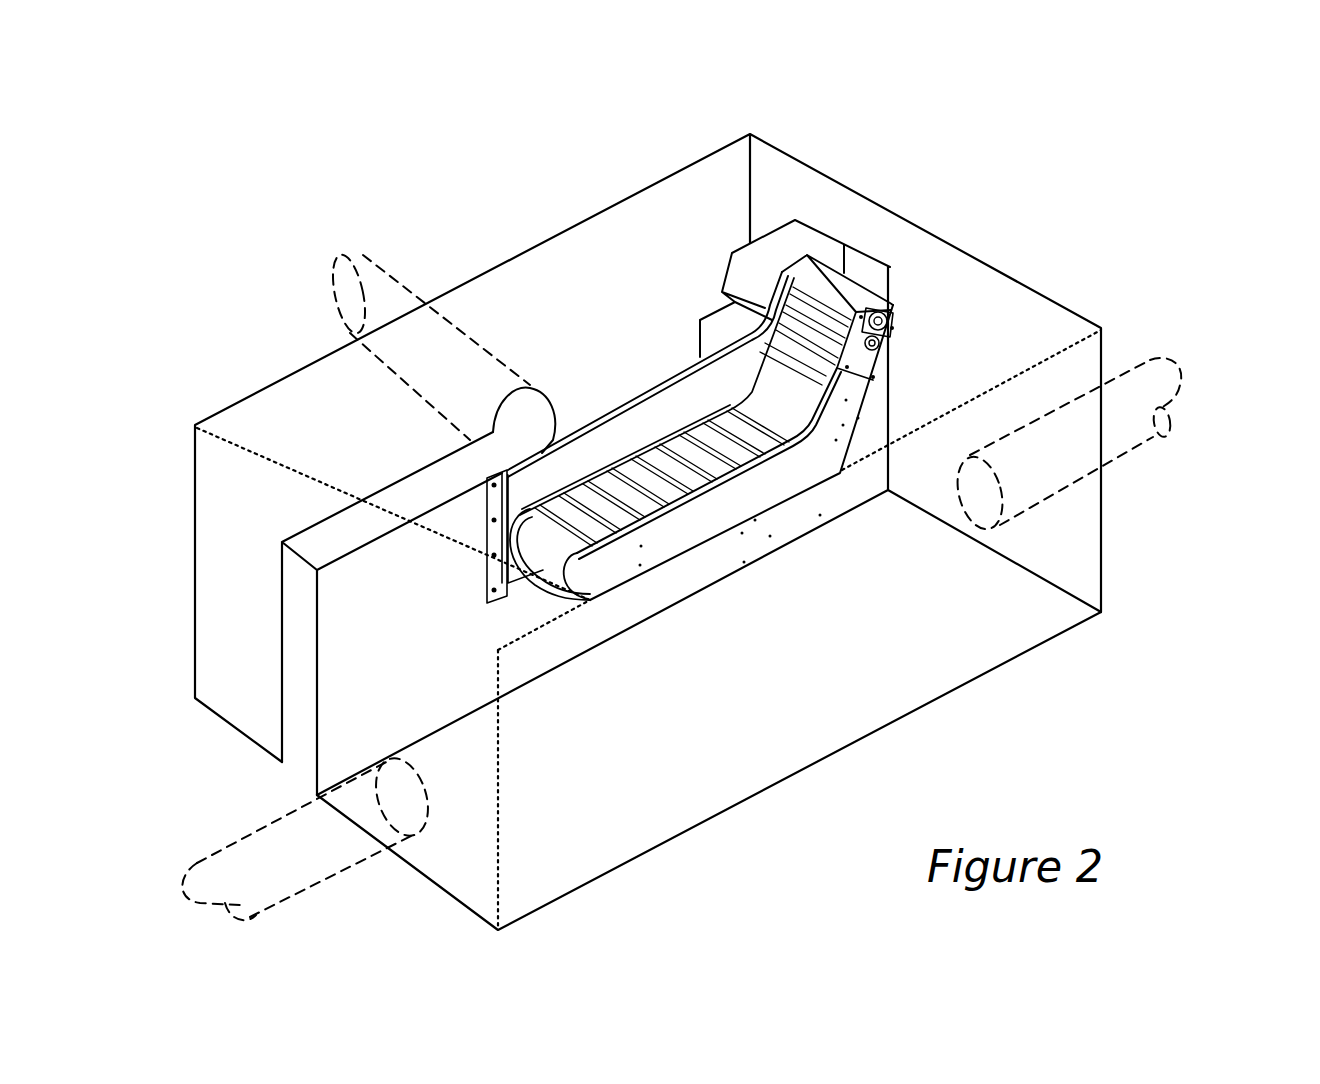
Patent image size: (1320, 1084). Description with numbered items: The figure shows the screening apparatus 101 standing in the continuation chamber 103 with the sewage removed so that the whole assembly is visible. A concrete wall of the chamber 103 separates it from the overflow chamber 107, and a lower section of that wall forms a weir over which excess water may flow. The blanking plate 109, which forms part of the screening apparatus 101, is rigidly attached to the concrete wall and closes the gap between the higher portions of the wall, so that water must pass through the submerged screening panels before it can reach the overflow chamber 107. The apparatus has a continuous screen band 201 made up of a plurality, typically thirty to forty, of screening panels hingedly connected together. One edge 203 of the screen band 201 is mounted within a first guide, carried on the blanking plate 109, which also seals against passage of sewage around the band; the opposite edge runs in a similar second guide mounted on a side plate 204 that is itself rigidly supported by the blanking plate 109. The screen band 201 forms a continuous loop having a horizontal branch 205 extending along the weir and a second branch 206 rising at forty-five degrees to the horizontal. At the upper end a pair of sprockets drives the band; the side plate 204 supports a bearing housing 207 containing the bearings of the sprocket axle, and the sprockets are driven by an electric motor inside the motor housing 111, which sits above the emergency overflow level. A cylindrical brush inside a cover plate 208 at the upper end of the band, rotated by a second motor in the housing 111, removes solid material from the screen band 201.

The screening apparatus 101 is at (872, 412).
The continuation chamber 103 is at (1052, 538).
The overflow chamber 107 is at (247, 673).
The blanking plate 109 is at (647, 423).
The motor housing 111 is at (818, 240).
The continuous screen band 201 is at (655, 497).
The edge of the screen band 203 is at (600, 478).
The side plate 204 is at (767, 487).
The horizontal branch 205 is at (697, 473).
The second branch 206 is at (887, 393).
The bearing housing 207 is at (955, 281).
The cover plate 208 is at (830, 318).